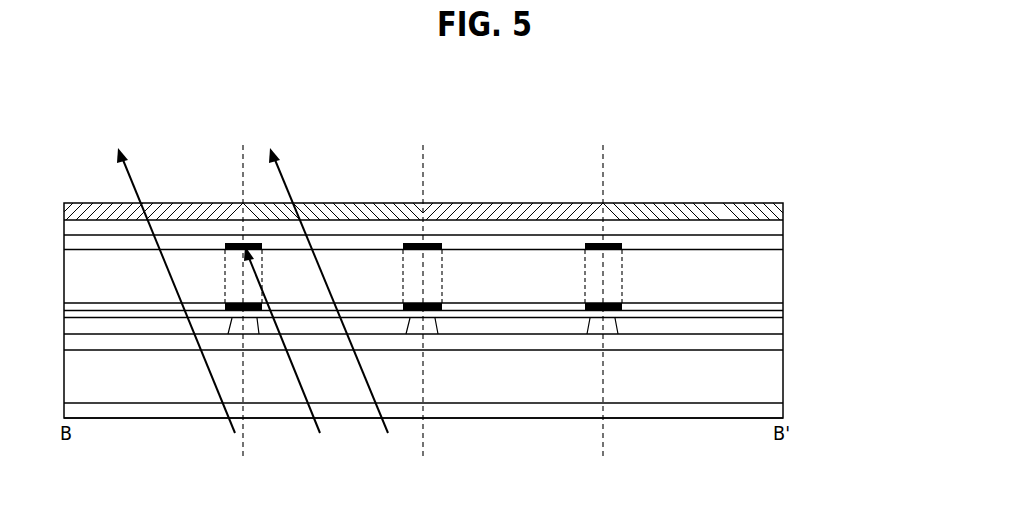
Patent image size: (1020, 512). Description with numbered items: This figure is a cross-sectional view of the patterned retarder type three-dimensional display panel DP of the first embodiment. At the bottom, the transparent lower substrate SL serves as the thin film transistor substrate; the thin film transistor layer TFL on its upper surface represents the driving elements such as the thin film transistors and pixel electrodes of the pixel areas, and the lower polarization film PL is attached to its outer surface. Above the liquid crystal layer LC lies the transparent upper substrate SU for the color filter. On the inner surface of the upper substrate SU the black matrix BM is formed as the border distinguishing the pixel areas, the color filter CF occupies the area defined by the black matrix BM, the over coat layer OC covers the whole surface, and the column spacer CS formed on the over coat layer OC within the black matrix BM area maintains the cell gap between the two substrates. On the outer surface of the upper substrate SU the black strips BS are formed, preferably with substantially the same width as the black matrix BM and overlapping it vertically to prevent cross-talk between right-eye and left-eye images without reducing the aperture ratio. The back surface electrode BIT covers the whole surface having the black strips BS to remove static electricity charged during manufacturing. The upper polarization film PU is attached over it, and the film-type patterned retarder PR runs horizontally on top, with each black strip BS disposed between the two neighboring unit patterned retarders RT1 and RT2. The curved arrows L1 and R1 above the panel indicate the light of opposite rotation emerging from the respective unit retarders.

The patterned retarder PR is at (794, 210).
The upper polarization film PU is at (777, 227).
The back surface electrode BIT is at (777, 240).
The upper substrate SU is at (777, 268).
The black matrix BM is at (621, 303).
The color filter CF is at (777, 305).
The over coat layer OC is at (777, 313).
The liquid crystal layer LC is at (777, 327).
The thin film transistor layer TFL is at (777, 343).
The lower substrate SL is at (777, 382).
The lower polarization film PL is at (777, 412).
The display panel DP is at (866, 424).
The column spacer CS is at (613, 323).
The black strip BS is at (613, 235).
The first unit patterned retarder RT1 is at (85, 203).
The second unit patterned retarder RT2 is at (341, 204).
The left-circularly polarized light L1 is at (95, 132).
The right-circularly polarized light R1 is at (292, 132).